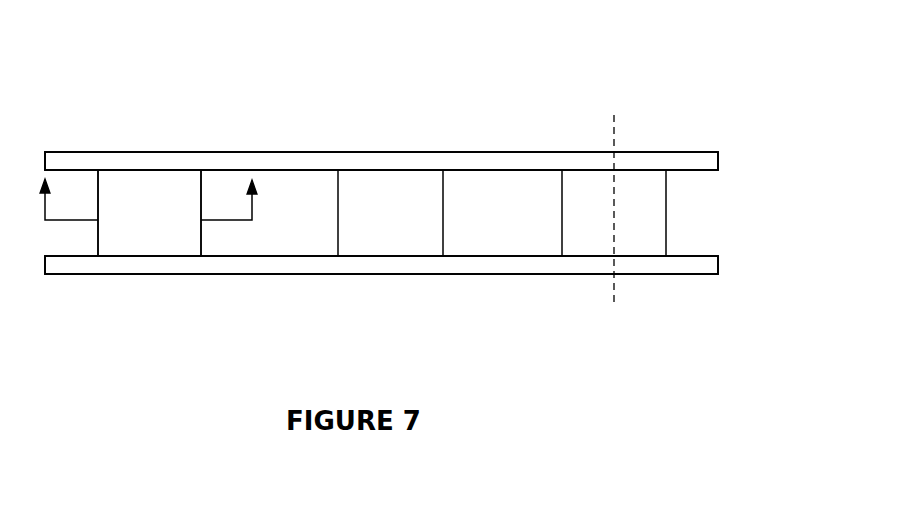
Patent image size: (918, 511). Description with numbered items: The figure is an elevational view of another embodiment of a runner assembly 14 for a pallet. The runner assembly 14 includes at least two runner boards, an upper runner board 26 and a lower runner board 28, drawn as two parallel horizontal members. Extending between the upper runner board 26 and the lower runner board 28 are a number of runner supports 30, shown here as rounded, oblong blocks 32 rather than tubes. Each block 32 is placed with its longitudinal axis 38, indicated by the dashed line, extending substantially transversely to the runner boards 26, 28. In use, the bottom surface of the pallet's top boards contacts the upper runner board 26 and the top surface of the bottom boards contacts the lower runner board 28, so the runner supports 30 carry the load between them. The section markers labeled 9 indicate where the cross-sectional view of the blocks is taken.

The runner assembly 14 is at (405, 138).
The upper runner board 26 is at (370, 158).
The lower runner board 28 is at (217, 265).
The runner supports 30 is at (581, 237).
The oblong block 32 is at (149, 231).
The longitudinal axis 38 is at (615, 288).
The section view 9-9 indicator 9 is at (152, 160).